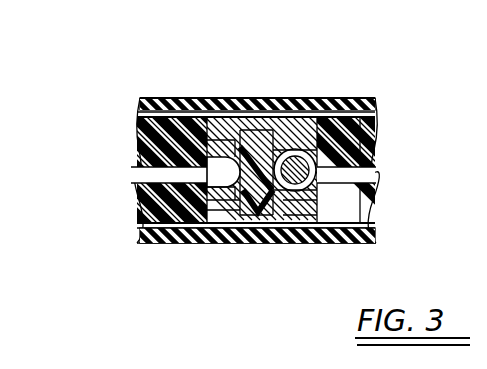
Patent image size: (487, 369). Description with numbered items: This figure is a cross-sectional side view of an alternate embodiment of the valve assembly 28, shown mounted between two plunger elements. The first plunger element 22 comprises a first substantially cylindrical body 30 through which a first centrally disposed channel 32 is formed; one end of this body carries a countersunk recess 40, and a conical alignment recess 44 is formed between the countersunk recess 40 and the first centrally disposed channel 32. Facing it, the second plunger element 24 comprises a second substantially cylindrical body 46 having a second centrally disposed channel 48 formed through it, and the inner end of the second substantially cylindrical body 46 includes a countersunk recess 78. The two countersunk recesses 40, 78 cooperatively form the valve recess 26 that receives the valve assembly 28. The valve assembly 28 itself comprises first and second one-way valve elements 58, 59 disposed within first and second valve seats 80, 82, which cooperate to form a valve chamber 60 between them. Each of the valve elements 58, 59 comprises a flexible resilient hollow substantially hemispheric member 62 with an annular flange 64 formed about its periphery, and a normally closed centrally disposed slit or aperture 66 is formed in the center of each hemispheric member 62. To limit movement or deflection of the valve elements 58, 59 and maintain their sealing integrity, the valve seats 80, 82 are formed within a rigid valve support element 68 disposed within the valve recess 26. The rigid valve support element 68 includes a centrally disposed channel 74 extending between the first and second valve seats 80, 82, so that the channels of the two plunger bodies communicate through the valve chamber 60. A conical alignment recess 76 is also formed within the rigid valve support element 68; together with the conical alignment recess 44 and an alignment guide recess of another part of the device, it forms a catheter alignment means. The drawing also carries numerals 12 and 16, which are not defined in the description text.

The connector assembly 12 is at (273, 189).
The upper plate 16 is at (167, 98).
The first plunger element 22 is at (148, 98).
The second plunger element 24 is at (347, 243).
The valve recess 26 is at (240, 220).
The valve assembly 28 is at (292, 215).
The first substantially cylindrical body 30 is at (140, 147).
The first centrally disposed channel 32 is at (137, 172).
The countersunk recess 40 is at (213, 150).
The conical alignment recess 44 is at (183, 243).
The second substantially cylindrical body 46 is at (362, 147).
The second centrally disposed channel 48 is at (373, 163).
The first one-way valve element 58 is at (237, 220).
The second one-way valve element 59 is at (293, 230).
The valve chamber 60 is at (283, 150).
The flexible resilient hollow substantially hemispheric member 62 is at (223, 215).
The annular flange 64 is at (200, 215).
The slit or aperture 66 is at (377, 116).
The rigid valve support element 68 is at (220, 138).
The centrally disposed channel 74 is at (257, 210).
The conical alignment recess 76 is at (340, 177).
The countersunk recess 78 is at (292, 149).
The first valve seat 80 is at (250, 145).
The second valve seat 82 is at (305, 130).